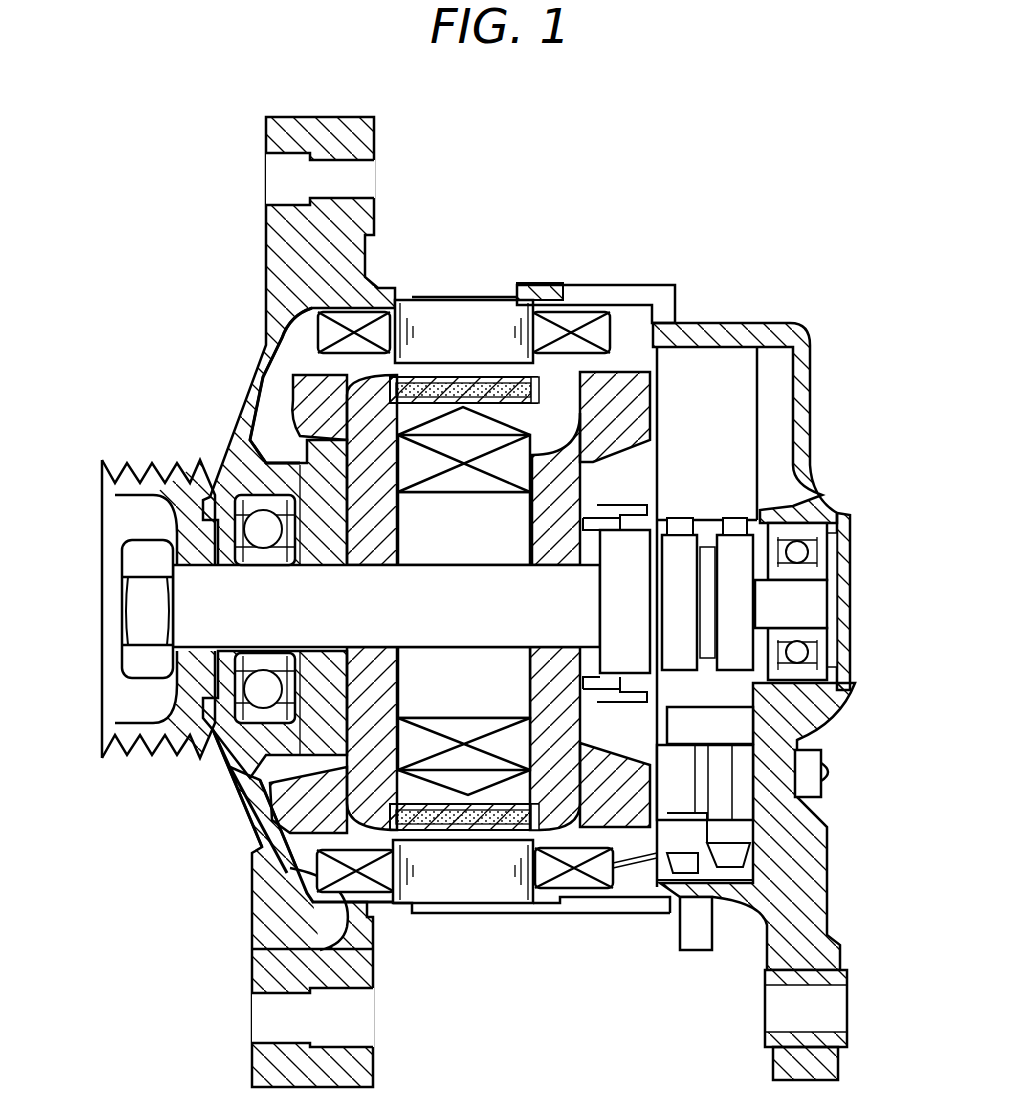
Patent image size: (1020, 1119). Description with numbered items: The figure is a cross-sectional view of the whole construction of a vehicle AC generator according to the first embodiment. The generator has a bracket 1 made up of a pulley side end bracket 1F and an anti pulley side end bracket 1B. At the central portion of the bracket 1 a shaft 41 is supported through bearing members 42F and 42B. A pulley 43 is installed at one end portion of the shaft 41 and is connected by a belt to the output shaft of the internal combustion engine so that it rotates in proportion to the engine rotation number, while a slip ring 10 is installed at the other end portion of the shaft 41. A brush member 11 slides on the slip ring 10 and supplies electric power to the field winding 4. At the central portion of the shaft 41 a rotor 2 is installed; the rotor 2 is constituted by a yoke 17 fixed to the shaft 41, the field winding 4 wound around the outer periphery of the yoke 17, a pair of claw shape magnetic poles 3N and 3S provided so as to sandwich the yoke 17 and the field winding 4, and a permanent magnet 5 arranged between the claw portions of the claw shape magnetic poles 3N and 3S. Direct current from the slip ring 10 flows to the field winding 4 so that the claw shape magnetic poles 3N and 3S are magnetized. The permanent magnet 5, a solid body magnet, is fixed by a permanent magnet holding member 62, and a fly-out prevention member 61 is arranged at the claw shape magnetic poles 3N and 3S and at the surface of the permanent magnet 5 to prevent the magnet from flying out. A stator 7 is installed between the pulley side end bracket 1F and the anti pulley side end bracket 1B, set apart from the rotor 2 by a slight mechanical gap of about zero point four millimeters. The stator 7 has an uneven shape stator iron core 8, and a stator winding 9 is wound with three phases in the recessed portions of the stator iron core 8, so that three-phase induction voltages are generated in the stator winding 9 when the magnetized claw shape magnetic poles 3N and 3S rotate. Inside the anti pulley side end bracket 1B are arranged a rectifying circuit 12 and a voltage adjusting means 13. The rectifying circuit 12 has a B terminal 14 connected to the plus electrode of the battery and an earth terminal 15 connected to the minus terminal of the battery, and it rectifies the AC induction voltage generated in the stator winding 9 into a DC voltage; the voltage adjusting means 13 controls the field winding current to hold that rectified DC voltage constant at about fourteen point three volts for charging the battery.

The bracket 1 is at (848, 549).
The anti pulley side end bracket 1B is at (735, 327).
The pulley side end bracket 1F is at (240, 809).
The rotor 2 is at (284, 409).
The claw shape magnetic pole 3N is at (378, 397).
The claw shape magnetic pole 3S is at (548, 390).
The field winding 4 is at (515, 747).
The permanent magnet 5 is at (425, 823).
The stator 7 is at (456, 299).
The stator iron core 8 is at (478, 320).
The stator winding 9 is at (323, 875).
The slip ring 10 is at (683, 550).
The brush member 11 is at (733, 527).
The rectifying circuit 12 is at (728, 725).
The voltage adjusting means 13 is at (720, 780).
The B terminal 14 is at (700, 950).
The earth terminal 15 is at (827, 777).
The yoke 17 is at (413, 513).
The shaft 41 is at (190, 618).
The bearing member 42F is at (240, 532).
The bearing member 42B is at (797, 533).
The pulley 43 is at (147, 463).
The fly-out prevention member 61 is at (470, 823).
The permanent magnet holding member 62 is at (537, 817).